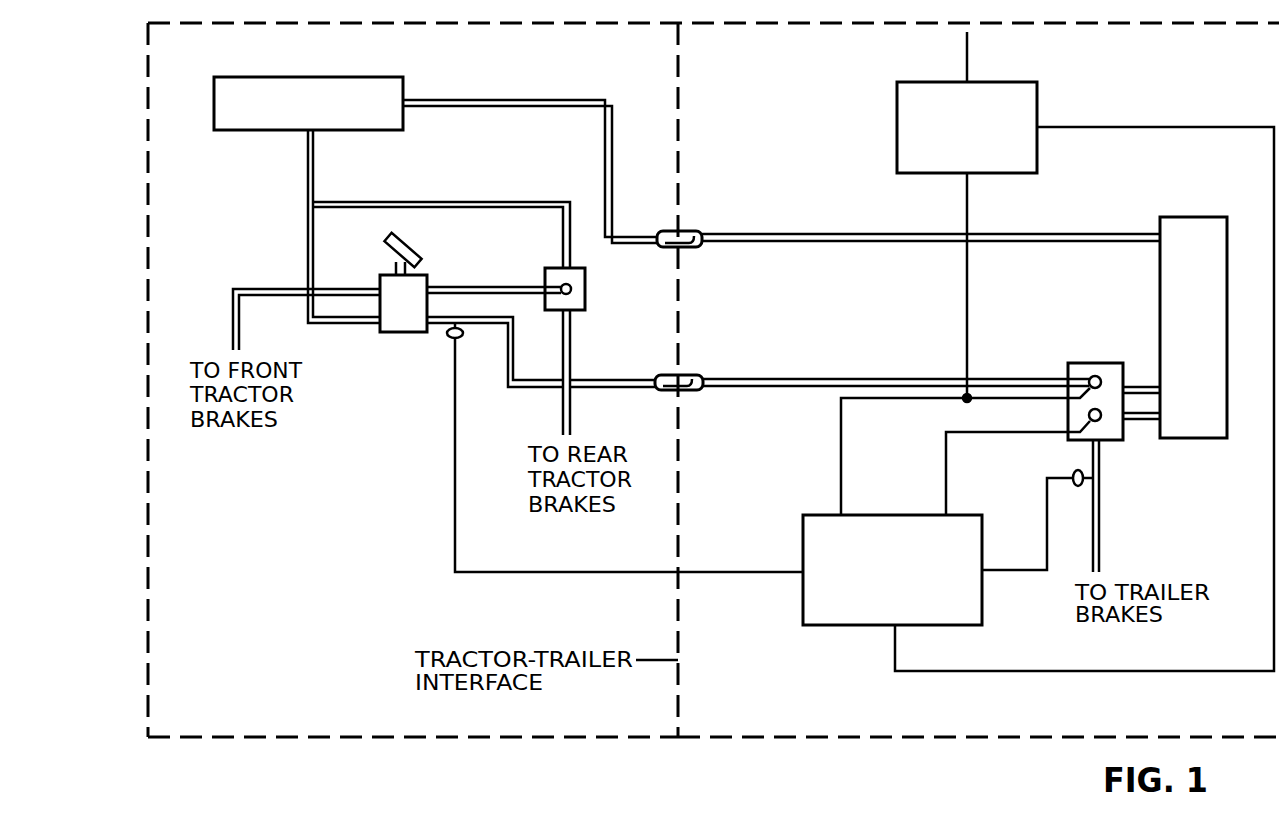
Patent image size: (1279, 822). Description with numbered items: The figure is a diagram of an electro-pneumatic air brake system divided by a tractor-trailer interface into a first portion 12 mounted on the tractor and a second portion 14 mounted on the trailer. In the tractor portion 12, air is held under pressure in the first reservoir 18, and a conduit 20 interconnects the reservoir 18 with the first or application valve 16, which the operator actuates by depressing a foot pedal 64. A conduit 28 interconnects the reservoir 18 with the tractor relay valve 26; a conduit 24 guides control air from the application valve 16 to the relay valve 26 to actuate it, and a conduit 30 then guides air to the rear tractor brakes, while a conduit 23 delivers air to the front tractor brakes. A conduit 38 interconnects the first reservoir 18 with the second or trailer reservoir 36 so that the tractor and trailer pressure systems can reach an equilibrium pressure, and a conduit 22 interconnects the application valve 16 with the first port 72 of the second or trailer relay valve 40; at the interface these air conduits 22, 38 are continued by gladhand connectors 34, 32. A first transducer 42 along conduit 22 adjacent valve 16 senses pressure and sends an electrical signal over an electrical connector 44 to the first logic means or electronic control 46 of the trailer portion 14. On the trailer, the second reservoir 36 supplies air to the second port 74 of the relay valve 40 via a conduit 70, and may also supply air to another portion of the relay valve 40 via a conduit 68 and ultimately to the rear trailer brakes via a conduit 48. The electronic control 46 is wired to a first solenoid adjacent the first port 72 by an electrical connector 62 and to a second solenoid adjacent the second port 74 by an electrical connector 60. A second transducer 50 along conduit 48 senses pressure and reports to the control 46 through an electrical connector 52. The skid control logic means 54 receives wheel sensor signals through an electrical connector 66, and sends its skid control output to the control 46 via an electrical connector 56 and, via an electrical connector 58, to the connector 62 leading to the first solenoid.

The first portion 12 is at (330, 740).
The second portion 14 is at (820, 739).
The first or application valve 16 is at (403, 303).
The first reservoir 18 is at (378, 77).
The conduit 20 is at (308, 232).
The conduit 22 is at (827, 375).
The conduit 23 is at (275, 289).
The conduit 24 is at (517, 285).
The tractor relay valve 26 is at (585, 289).
The conduit 28 is at (521, 200).
The conduit 30 is at (570, 338).
The gladhand connector 32 is at (690, 231).
The gladhand connector 34 is at (690, 375).
The second or trailer reservoir 36 is at (1188, 217).
The conduit 38 is at (802, 230).
The second or trailer relay valve 40 is at (1077, 363).
The first transducer 42 is at (447, 340).
The electrical connector 44 is at (455, 517).
The first logic means or electronic control 46 is at (830, 625).
The conduit 48 is at (1100, 535).
The second transducer 50 is at (1075, 468).
The electrical connector 52 is at (1047, 535).
The second or skid control logic means 54 is at (1037, 100).
The electrical connector 56 is at (1004, 671).
The electrical connector 58 is at (967, 208).
The electrical connector 60 is at (946, 465).
The electrical connector 62 is at (841, 465).
The foot pedal 64 is at (413, 249).
The electrical connector 66 is at (967, 52).
The conduit 68 is at (1142, 386).
The conduit 70 is at (1142, 421).
The first port 72 is at (1095, 375).
The second port 74 is at (1088, 415).